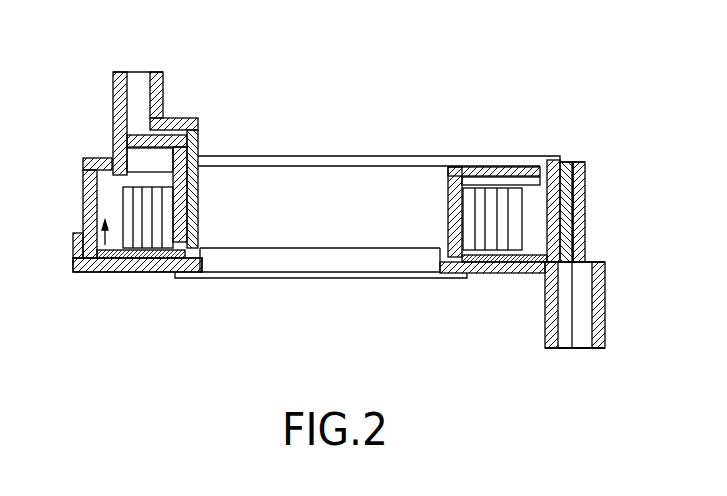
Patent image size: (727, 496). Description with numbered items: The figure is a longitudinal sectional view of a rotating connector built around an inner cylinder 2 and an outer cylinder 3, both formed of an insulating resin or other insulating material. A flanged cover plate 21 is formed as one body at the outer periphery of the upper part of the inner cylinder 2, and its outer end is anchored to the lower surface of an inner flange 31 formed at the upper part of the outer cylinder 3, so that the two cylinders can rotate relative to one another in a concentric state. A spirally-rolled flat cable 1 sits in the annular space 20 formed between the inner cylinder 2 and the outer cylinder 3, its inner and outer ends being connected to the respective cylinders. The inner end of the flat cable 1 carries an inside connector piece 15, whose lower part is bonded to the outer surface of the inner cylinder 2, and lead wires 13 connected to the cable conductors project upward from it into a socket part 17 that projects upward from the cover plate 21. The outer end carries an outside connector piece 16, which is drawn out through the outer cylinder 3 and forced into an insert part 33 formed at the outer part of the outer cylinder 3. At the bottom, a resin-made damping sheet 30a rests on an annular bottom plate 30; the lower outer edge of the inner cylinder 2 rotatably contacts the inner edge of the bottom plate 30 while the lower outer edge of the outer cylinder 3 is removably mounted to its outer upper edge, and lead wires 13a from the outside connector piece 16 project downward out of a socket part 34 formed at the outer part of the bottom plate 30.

The flat cable 1 is at (120, 242).
The inner cylinder 2 is at (447, 188).
The outer cylinder 3 is at (83, 165).
The lead wires 13 is at (137, 103).
The lead wires 13a is at (573, 275).
The inside connector piece 15 is at (173, 160).
The outside connector piece 16 is at (582, 190).
The socket part 17 is at (163, 83).
The annular space 20 is at (110, 263).
The cover plate 21 is at (480, 170).
The bottom plate 30 is at (150, 273).
The damping sheet 30a is at (500, 273).
The inner flange 31 is at (109, 160).
The insert part 33 is at (583, 225).
The socket part 34 is at (605, 297).